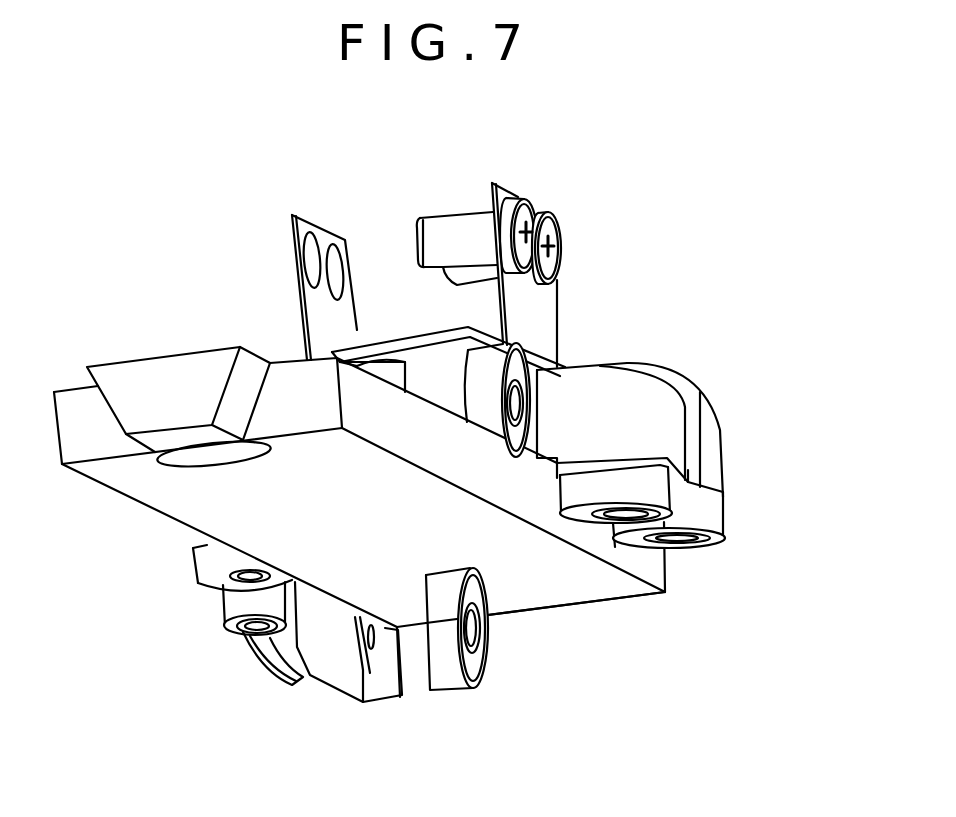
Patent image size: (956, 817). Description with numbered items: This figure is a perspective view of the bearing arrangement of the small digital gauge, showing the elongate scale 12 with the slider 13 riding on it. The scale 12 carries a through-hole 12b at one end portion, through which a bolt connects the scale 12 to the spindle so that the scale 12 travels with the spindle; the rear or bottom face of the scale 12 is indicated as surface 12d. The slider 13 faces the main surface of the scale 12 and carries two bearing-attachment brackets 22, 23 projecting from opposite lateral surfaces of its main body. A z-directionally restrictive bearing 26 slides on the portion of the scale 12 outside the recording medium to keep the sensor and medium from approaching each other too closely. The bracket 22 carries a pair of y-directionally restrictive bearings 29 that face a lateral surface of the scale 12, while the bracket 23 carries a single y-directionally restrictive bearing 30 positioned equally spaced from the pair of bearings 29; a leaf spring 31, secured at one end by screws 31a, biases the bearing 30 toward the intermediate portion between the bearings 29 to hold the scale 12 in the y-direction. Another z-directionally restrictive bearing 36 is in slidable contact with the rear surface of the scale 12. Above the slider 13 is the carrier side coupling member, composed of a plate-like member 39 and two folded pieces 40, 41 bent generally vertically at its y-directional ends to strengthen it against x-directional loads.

The scale 12 is at (620, 587).
The through-hole 12b is at (172, 455).
The bottom surface of housing 12d is at (567, 587).
The slider 13 is at (418, 330).
The bearing-attachment bracket 22 is at (643, 405).
The bearing-attachment bracket 23 is at (345, 665).
The z-directionally restrictive bearing 26 is at (483, 368).
The y-directionally restrictive bearings 29 is at (653, 497).
The y-directionally restrictive bearing 30 is at (205, 565).
The leaf spring 31 is at (262, 648).
The screws 31a is at (288, 678).
The z-directionally restrictive bearing 36 is at (460, 672).
The plate-like member 39 is at (374, 336).
The folded piece 40 is at (318, 236).
The folded piece 41 is at (527, 300).